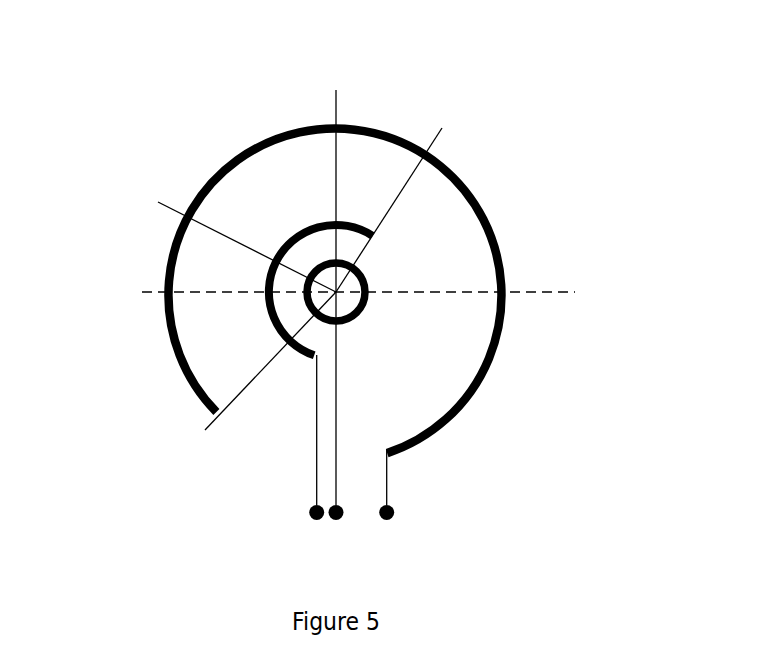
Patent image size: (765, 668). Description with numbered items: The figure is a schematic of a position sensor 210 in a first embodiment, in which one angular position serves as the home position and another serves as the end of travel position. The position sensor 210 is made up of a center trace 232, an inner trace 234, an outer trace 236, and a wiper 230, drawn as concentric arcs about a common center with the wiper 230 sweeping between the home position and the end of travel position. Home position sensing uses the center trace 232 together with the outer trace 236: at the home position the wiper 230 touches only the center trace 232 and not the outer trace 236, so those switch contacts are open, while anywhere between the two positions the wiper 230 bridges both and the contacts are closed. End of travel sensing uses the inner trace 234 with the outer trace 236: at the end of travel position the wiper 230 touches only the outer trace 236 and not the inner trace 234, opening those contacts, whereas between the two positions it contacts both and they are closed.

The position sensor 210 is at (553, 173).
The wiper 230 is at (207, 228).
The center trace 232 is at (370, 294).
The inner trace 234 is at (287, 243).
The outer trace 236 is at (230, 160).